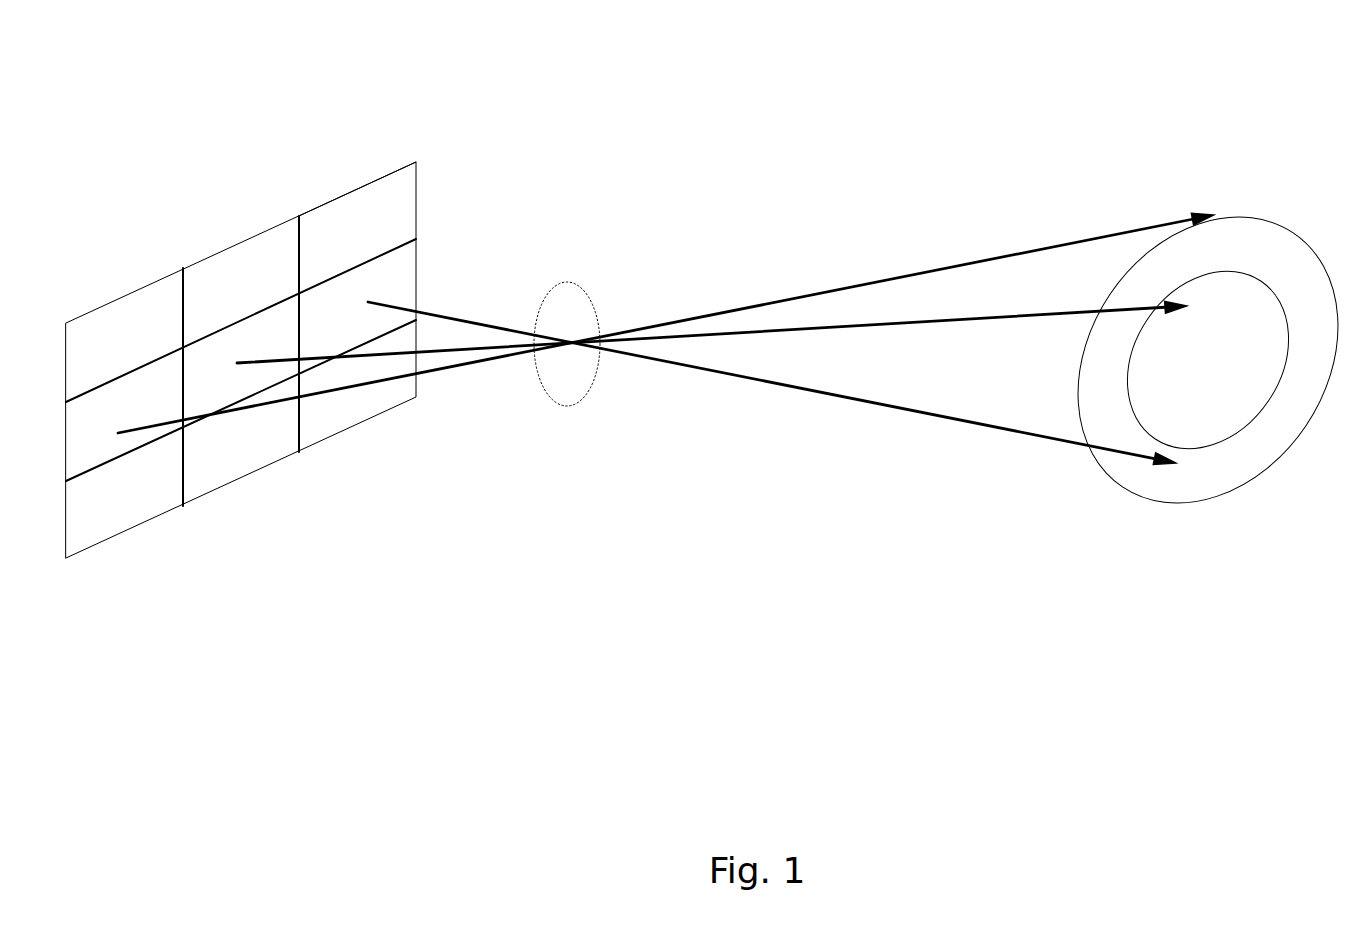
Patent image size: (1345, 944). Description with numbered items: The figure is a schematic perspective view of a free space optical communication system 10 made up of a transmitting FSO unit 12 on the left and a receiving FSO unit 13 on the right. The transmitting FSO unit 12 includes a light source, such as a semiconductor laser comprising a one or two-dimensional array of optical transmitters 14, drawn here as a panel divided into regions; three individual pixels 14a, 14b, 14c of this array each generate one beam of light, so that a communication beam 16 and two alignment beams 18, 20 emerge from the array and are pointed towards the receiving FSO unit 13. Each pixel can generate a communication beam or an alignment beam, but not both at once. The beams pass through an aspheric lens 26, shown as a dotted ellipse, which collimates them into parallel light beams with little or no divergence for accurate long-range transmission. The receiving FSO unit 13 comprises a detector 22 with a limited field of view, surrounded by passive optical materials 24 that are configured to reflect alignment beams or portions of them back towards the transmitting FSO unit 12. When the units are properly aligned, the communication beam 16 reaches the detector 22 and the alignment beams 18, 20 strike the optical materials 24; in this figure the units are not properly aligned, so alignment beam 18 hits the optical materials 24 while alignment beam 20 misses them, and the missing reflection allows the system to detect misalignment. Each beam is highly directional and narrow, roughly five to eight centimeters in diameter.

The free space optical communication system 10 is at (773, 101).
The transmitting FSO unit 12 is at (268, 104).
The receiving FSO unit 13 is at (1182, 149).
The array of optical transmitters 14 is at (418, 258).
The pixel 14a is at (142, 380).
The pixel 14b is at (237, 340).
The pixel 14c is at (352, 288).
The communication beam 16 is at (682, 337).
The alignment beam 18 is at (643, 360).
The alignment beam 20 is at (730, 313).
The detector 22 is at (1207, 359).
The passive optical materials 24 is at (1191, 503).
The aspheric lens 26 is at (572, 282).